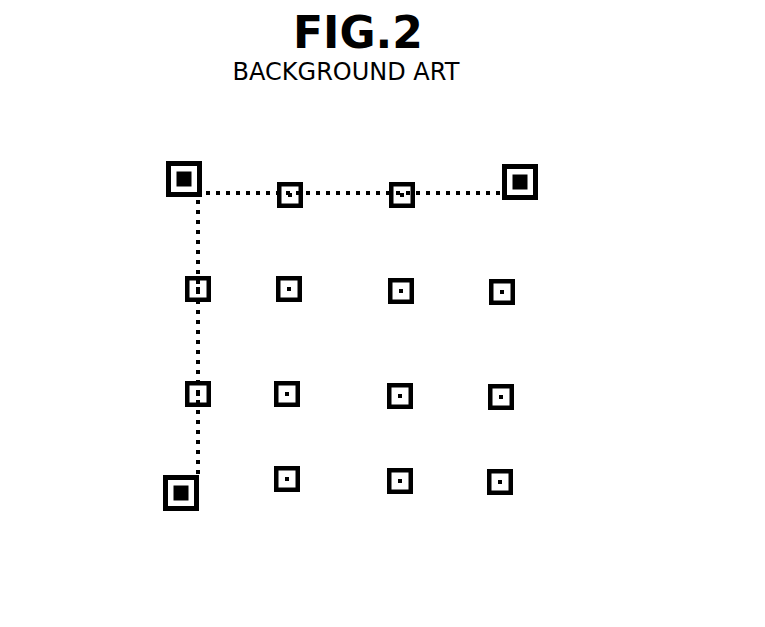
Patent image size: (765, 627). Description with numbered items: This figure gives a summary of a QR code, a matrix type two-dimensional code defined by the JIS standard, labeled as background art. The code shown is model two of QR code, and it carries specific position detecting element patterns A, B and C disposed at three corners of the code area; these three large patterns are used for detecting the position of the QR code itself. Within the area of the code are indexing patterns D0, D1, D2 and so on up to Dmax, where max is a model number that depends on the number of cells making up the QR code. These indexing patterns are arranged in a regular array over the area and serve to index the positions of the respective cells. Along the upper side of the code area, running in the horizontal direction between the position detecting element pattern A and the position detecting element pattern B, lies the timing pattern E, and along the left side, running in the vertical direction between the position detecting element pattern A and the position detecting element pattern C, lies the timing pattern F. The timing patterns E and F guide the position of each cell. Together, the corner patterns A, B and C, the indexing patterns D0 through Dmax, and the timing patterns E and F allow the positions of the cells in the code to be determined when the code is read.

The position detecting element pattern A is at (184, 161).
The position detecting element pattern B is at (520, 164).
The position detecting element pattern C is at (180, 511).
The indexing pattern D0 is at (292, 182).
The indexing pattern D1 is at (404, 182).
The indexing pattern D2 is at (185, 290).
The indexing pattern Dmax is at (514, 480).
The timing pattern E is at (236, 189).
The timing pattern F is at (196, 432).